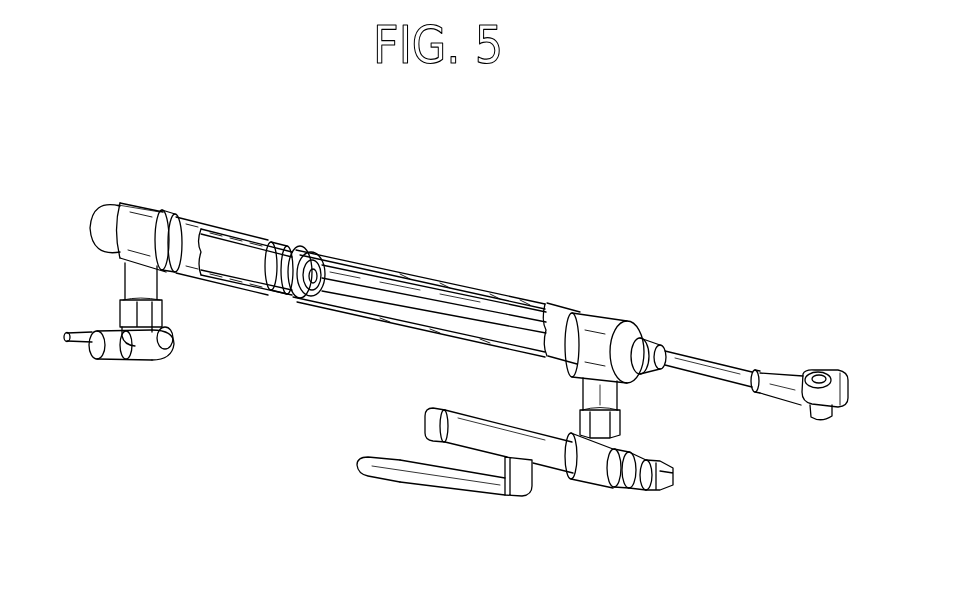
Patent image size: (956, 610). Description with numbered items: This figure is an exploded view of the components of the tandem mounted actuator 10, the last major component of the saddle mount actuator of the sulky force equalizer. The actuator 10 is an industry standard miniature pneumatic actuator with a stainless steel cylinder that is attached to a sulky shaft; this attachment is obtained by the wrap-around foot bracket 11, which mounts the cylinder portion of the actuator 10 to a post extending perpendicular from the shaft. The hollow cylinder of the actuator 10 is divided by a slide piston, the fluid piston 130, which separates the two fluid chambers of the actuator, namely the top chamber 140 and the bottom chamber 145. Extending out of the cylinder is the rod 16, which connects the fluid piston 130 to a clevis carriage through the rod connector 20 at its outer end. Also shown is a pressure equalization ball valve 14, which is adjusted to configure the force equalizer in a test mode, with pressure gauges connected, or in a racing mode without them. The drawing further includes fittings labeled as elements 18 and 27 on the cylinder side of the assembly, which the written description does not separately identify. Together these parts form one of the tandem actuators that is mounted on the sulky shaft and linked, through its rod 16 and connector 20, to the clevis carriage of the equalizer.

The tandem mounted actuator 10 is at (556, 258).
The foot bracket 11 is at (103, 212).
The pressure equalization ball valve 14 is at (407, 483).
The rod 16 is at (698, 362).
The elbow fitting 18 is at (75, 343).
The rod connector 20 is at (806, 374).
The valve 27 is at (593, 470).
The fluid piston 130 is at (302, 245).
The top chamber 140 is at (416, 270).
The bottom chamber 145 is at (224, 233).